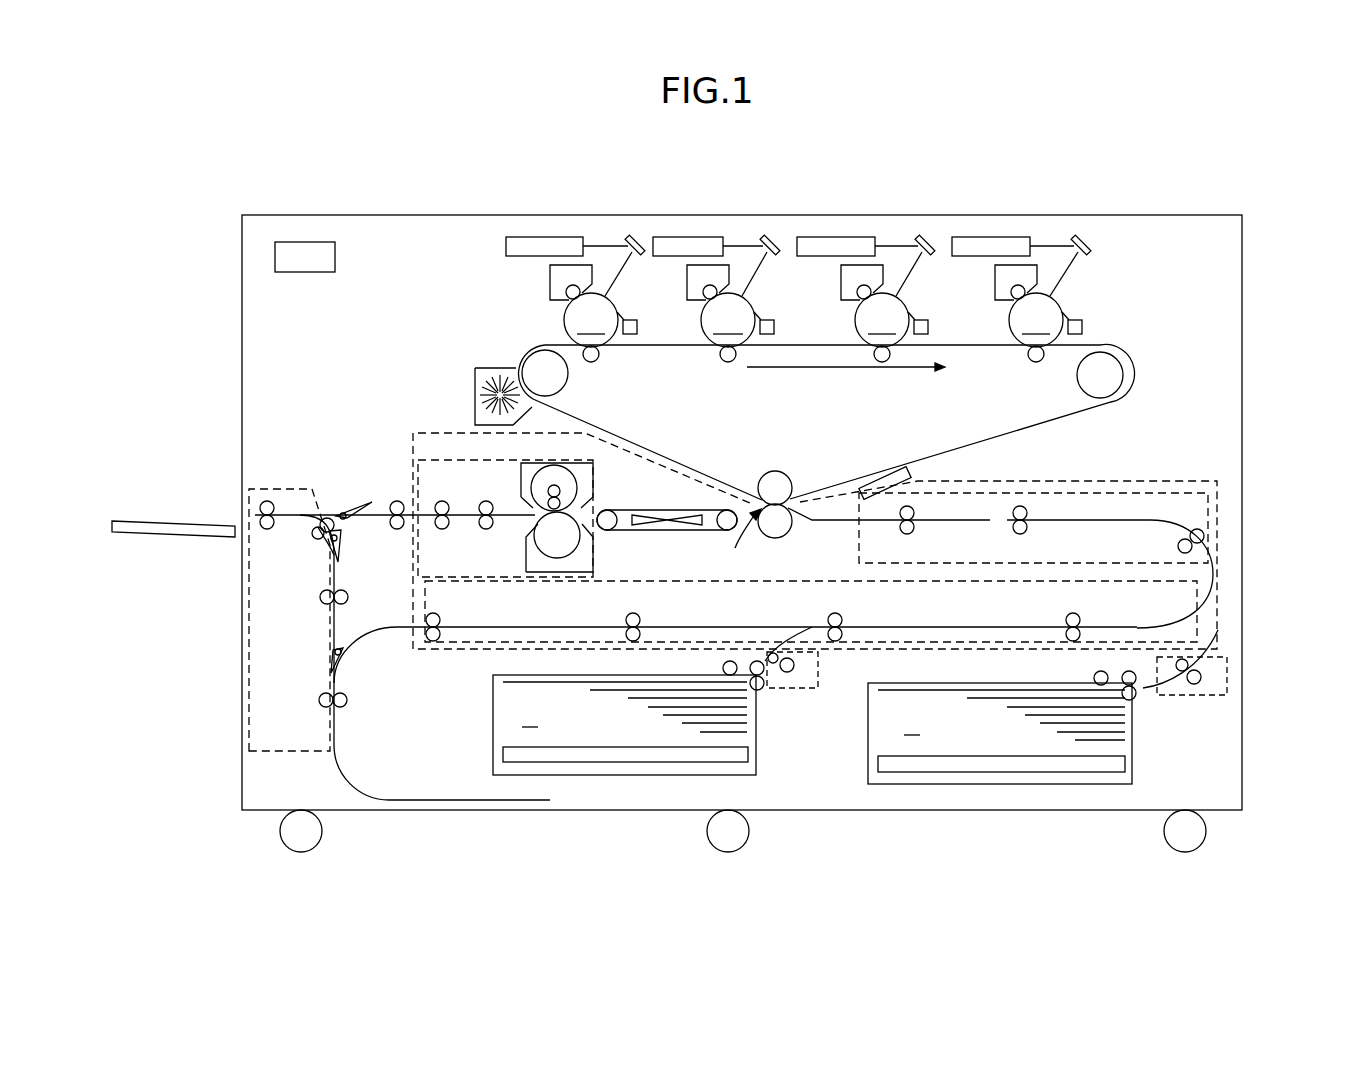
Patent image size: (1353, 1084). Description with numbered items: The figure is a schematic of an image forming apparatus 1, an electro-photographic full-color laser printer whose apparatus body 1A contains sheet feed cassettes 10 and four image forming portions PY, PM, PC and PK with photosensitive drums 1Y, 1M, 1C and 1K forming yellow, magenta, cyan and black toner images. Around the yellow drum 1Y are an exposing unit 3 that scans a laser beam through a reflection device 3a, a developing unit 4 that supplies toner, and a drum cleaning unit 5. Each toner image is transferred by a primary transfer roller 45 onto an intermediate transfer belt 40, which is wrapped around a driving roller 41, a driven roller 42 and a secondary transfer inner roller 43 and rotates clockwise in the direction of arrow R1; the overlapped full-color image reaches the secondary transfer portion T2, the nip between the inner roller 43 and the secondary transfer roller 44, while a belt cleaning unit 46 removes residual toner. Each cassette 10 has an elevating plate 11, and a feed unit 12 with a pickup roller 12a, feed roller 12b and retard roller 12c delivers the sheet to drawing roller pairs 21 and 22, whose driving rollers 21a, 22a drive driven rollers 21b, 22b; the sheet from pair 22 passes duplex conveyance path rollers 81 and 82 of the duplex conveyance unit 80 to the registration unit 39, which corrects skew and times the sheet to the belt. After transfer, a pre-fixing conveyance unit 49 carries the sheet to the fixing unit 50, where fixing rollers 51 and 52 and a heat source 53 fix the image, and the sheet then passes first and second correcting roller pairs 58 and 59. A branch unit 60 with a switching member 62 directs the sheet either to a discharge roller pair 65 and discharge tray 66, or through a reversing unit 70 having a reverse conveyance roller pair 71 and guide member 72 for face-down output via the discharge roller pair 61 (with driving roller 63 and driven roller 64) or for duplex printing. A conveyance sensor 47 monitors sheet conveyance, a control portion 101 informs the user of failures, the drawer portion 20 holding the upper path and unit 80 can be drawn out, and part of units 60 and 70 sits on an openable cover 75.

The image forming apparatus 1 is at (1137, 198).
The apparatus body 1A is at (1228, 204).
The control portion 101 is at (318, 240).
The exposing unit 3 is at (527, 237).
The reflection device 3a is at (638, 240).
The developing unit 4 is at (550, 283).
The drum cleaning unit 5 is at (628, 318).
The photosensitive drum 1Y is at (591, 320).
The photosensitive drum 1M is at (728, 320).
The photosensitive drum 1C is at (882, 320).
The photosensitive drum 1K is at (1036, 320).
The image forming portion PY is at (582, 244).
The image forming portion PM is at (720, 244).
The image forming portion PC is at (872, 244).
The image forming portion PK is at (1027, 244).
The intermediate transfer belt 40 is at (827, 422).
The driving roller 41 is at (561, 374).
The driven roller 42 is at (1113, 372).
The secondary transfer inner roller 43 is at (773, 478).
The secondary transfer roller 44 is at (775, 530).
The primary transfer roller 45 is at (597, 358).
The belt cleaning unit 46 is at (492, 368).
The conveyance sensor 47 is at (882, 472).
The pre-fixing conveyance unit 49 is at (632, 532).
The fixing unit 50 is at (527, 477).
The fixing roller 51 is at (583, 486).
The fixing roller 52 is at (573, 543).
The heat source 53 is at (545, 494).
The first correcting roller pair 58 is at (440, 505).
The second correcting roller pair 59 is at (395, 505).
The branch unit 60 is at (325, 490).
The discharge roller pair 61 is at (301, 535).
The switching member 62 is at (358, 505).
The driving roller 63 is at (320, 541).
The driven roller 64 is at (344, 530).
The discharge roller pair 65 is at (262, 503).
The discharge tray 66 is at (160, 522).
The reversing unit 70 is at (360, 710).
The reverse conveyance roller pair 71 is at (319, 700).
The guide member 72 is at (330, 660).
The openable cover 75 is at (311, 643).
The duplex conveyance unit 80 is at (807, 617).
The duplex conveyance path roller 81 is at (845, 621).
The duplex conveyance path roller 82 is at (1083, 621).
The registration unit 39 is at (1222, 511).
The drawer portion 20 is at (1231, 477).
The sheet feed cassette 10 is at (812, 781).
The elevating plate 11 is at (590, 757).
The feed unit 12 is at (941, 701).
The pickup roller 12a is at (730, 661).
The feed roller 12b is at (757, 661).
The retard roller 12c is at (760, 690).
The drawing roller pair 22 is at (828, 706).
The driving roller 22a is at (797, 667).
The driven roller 22b is at (775, 672).
The drawing roller pair 21 is at (1227, 719).
The driving roller 21a is at (1201, 677).
The driven roller 21b is at (1182, 672).
The arrow R1 is at (846, 380).
The secondary transfer portion T2 is at (736, 541).